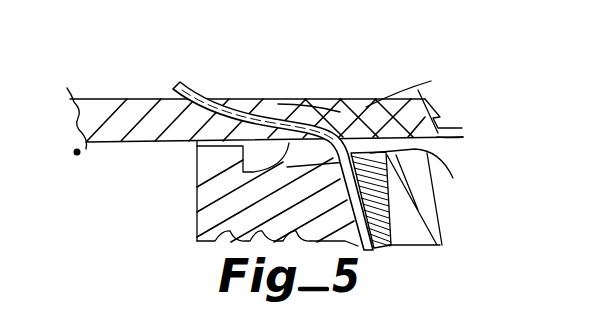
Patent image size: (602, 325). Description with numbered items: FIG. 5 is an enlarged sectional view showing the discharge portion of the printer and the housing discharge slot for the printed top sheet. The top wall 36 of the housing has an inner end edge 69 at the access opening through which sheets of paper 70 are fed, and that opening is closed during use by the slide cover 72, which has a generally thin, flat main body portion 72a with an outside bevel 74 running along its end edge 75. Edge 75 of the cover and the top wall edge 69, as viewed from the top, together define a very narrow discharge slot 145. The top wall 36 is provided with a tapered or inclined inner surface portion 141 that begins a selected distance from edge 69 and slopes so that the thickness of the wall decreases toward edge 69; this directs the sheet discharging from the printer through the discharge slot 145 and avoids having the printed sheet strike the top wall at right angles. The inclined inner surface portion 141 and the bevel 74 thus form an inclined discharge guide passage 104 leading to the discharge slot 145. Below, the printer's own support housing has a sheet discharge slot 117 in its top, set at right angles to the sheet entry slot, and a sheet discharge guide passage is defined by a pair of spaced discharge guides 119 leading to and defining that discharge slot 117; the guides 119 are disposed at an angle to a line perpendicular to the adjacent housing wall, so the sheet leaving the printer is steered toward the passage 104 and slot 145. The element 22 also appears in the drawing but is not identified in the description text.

The plate 72 is at (76, 152).
The plate upper surface 72a is at (121, 106).
The tube 70 is at (183, 82).
The tube passage 145 is at (251, 103).
The conduit 69 is at (336, 104).
The sheet member 104 is at (395, 87).
The seal 141 is at (441, 115).
The housing 36 is at (448, 126).
The sleeve 117 is at (449, 173).
The threaded fastener 119 is at (400, 200).
The block 74 is at (195, 147).
The base 75 is at (197, 219).
The body 22 is at (398, 318).